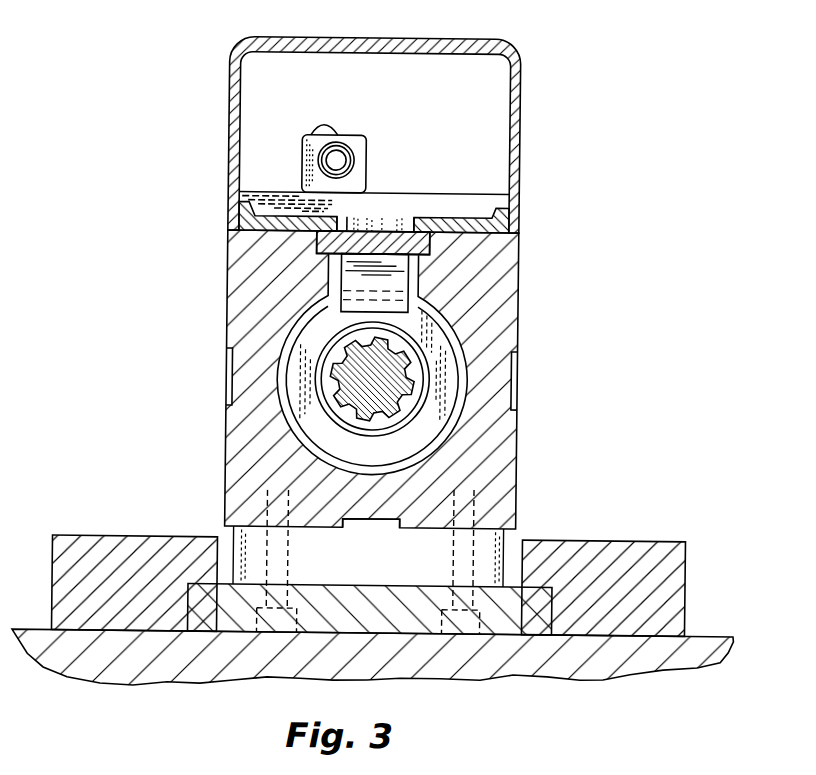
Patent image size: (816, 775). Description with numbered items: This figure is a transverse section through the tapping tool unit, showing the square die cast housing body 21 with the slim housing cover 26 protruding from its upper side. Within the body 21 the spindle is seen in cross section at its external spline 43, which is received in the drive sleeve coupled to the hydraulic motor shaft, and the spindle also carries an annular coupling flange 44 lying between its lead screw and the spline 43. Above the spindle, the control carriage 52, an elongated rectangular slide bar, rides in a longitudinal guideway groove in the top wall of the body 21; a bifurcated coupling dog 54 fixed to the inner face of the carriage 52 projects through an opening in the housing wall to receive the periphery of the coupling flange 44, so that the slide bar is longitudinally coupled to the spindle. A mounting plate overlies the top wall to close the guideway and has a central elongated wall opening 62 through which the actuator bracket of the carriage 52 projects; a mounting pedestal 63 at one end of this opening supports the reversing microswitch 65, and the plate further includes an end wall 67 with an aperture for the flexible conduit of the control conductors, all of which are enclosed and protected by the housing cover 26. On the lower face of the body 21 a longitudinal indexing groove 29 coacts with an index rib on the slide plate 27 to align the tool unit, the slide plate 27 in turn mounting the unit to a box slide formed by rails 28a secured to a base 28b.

The elongated body 21 is at (508, 284).
The housing cover 26 is at (491, 44).
The slide plate 27 is at (338, 591).
The rails 28a is at (636, 545).
The base 28b is at (652, 659).
The longitudinal indexing groove 29 is at (385, 520).
The external spline 43 is at (397, 390).
The coupling flange 44 is at (445, 362).
The control carriage 52 is at (373, 243).
The bifurcated coupling dog 54 is at (341, 277).
The central elongated wall opening 62 is at (411, 226).
The mounting pedestal 63 is at (283, 193).
The reversing microswitch 65 is at (353, 138).
The end wall 67 is at (463, 218).